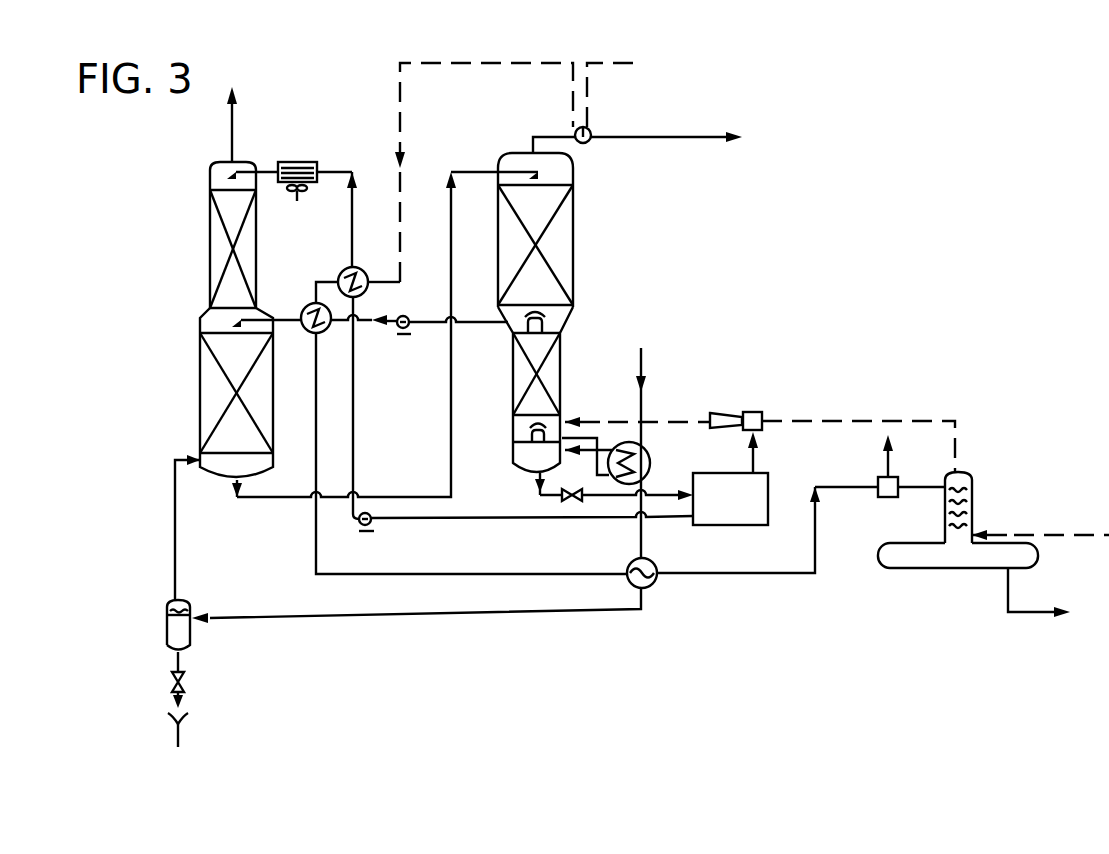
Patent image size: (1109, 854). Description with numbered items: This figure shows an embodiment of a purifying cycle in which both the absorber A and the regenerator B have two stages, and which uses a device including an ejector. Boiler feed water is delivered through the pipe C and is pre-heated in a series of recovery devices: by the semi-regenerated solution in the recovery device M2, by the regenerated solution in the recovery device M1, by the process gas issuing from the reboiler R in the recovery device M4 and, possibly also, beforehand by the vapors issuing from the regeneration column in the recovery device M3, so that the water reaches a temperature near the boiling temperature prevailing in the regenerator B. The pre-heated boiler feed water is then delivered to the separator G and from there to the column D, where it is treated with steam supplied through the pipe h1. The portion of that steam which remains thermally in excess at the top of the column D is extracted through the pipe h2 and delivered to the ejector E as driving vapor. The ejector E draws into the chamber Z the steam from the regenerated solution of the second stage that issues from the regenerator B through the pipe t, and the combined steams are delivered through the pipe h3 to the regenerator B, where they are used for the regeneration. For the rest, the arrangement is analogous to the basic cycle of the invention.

The absorber A is at (237, 343).
The regenerator B is at (531, 312).
The pipe C is at (519, 172).
The column D is at (968, 507).
The ejector E is at (736, 407).
The separator G is at (880, 466).
The reboiler R is at (606, 461).
The chamber Z is at (730, 492).
The pipe t is at (606, 487).
The recovery device M1 is at (365, 272).
The recovery device M2 is at (327, 335).
The recovery device M3 is at (599, 154).
The recovery device M4 is at (657, 587).
The pipe h1 is at (1040, 523).
The pipe h2 is at (874, 446).
The pipe h3 is at (637, 412).